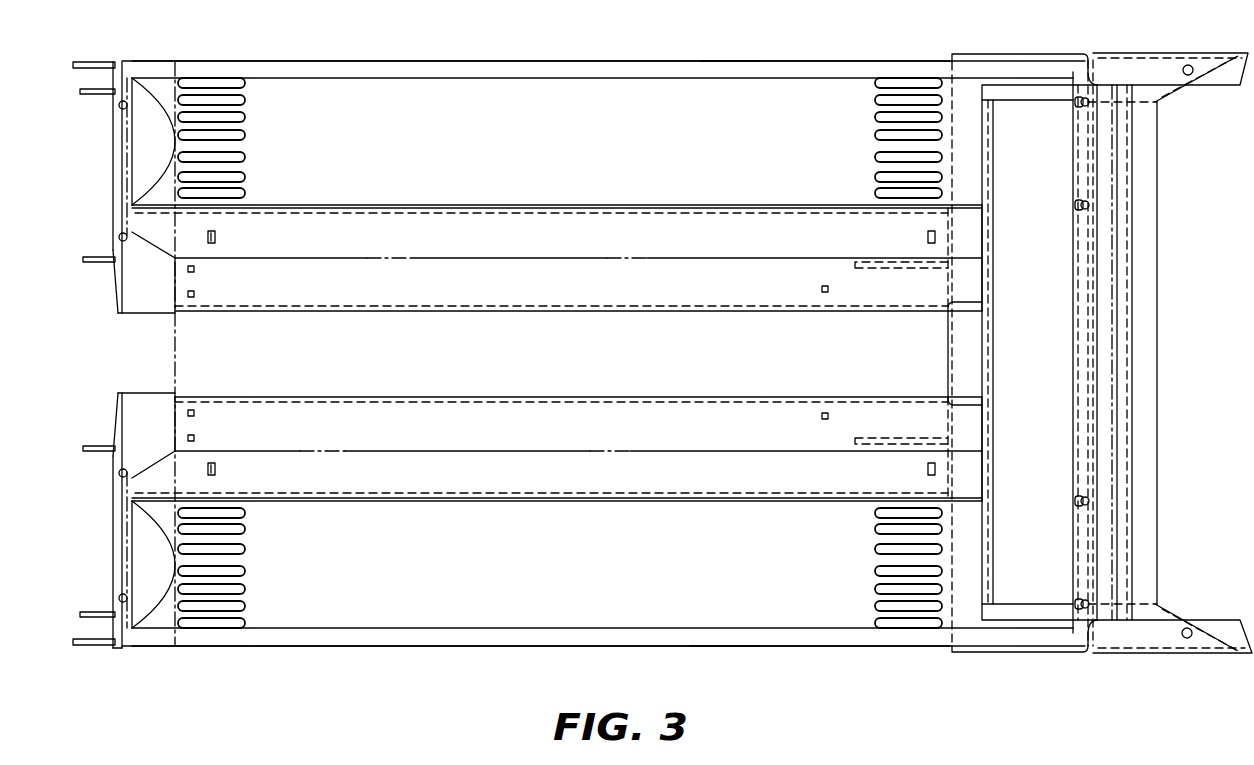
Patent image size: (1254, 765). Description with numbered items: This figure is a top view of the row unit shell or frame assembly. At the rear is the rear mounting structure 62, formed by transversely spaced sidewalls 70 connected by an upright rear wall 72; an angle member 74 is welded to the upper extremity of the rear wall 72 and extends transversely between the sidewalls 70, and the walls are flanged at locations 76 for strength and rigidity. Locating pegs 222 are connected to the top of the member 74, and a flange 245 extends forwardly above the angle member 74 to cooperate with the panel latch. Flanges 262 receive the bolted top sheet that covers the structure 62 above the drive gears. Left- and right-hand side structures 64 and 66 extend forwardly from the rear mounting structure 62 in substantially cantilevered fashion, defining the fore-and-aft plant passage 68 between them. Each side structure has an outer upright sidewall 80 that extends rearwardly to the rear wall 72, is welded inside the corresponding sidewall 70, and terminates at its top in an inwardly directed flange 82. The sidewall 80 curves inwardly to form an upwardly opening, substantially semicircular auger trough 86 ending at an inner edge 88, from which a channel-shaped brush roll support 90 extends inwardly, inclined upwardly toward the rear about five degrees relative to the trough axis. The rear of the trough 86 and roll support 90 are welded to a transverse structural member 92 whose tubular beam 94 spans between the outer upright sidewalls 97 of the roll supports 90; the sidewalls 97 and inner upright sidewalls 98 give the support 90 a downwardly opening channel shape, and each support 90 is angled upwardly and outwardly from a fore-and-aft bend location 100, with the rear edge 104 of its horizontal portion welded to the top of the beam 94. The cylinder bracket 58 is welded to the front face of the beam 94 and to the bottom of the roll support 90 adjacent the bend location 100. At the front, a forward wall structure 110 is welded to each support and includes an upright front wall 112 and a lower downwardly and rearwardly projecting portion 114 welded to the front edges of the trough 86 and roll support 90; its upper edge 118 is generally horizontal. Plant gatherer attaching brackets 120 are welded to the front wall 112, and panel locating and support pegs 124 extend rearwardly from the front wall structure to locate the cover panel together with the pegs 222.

The cylinder bracket 58 is at (897, 436).
The rear mounting structure 62 is at (1084, 682).
The left-hand side structure 64 is at (432, 628).
The right-hand side structure 66 is at (460, 82).
The plant passage 68 is at (148, 353).
The sidewalls 70 is at (1048, 53).
The rear wall 72 is at (1120, 341).
The angle member 74 is at (1093, 365).
The flanges 76 is at (1043, 100).
The outer upright sidewall 80 is at (623, 61).
The inwardly directed flange 82 is at (712, 61).
The auger trough 86 is at (573, 146).
The inner edge 88 is at (406, 207).
The brush roll support 90 is at (677, 224).
The transverse structural member 92 is at (922, 335).
The tubular beam 94 is at (960, 361).
The outer upright sidewalls 97 is at (467, 214).
The inner upright sidewalls 98 is at (578, 310).
The bend location 100 is at (348, 257).
The rear edge 104 is at (972, 287).
The forward wall structure 110 is at (128, 146).
The upright front wall 112 is at (120, 284).
The lower projecting portion 114 is at (168, 314).
The upper edge 118 is at (114, 172).
The plant gatherer attaching brackets 120 is at (86, 62).
The panel locating and support pegs 124 is at (120, 108).
The locating pegs 222 is at (1078, 106).
The flange 245 is at (1073, 243).
The flanges 262 is at (1226, 86).